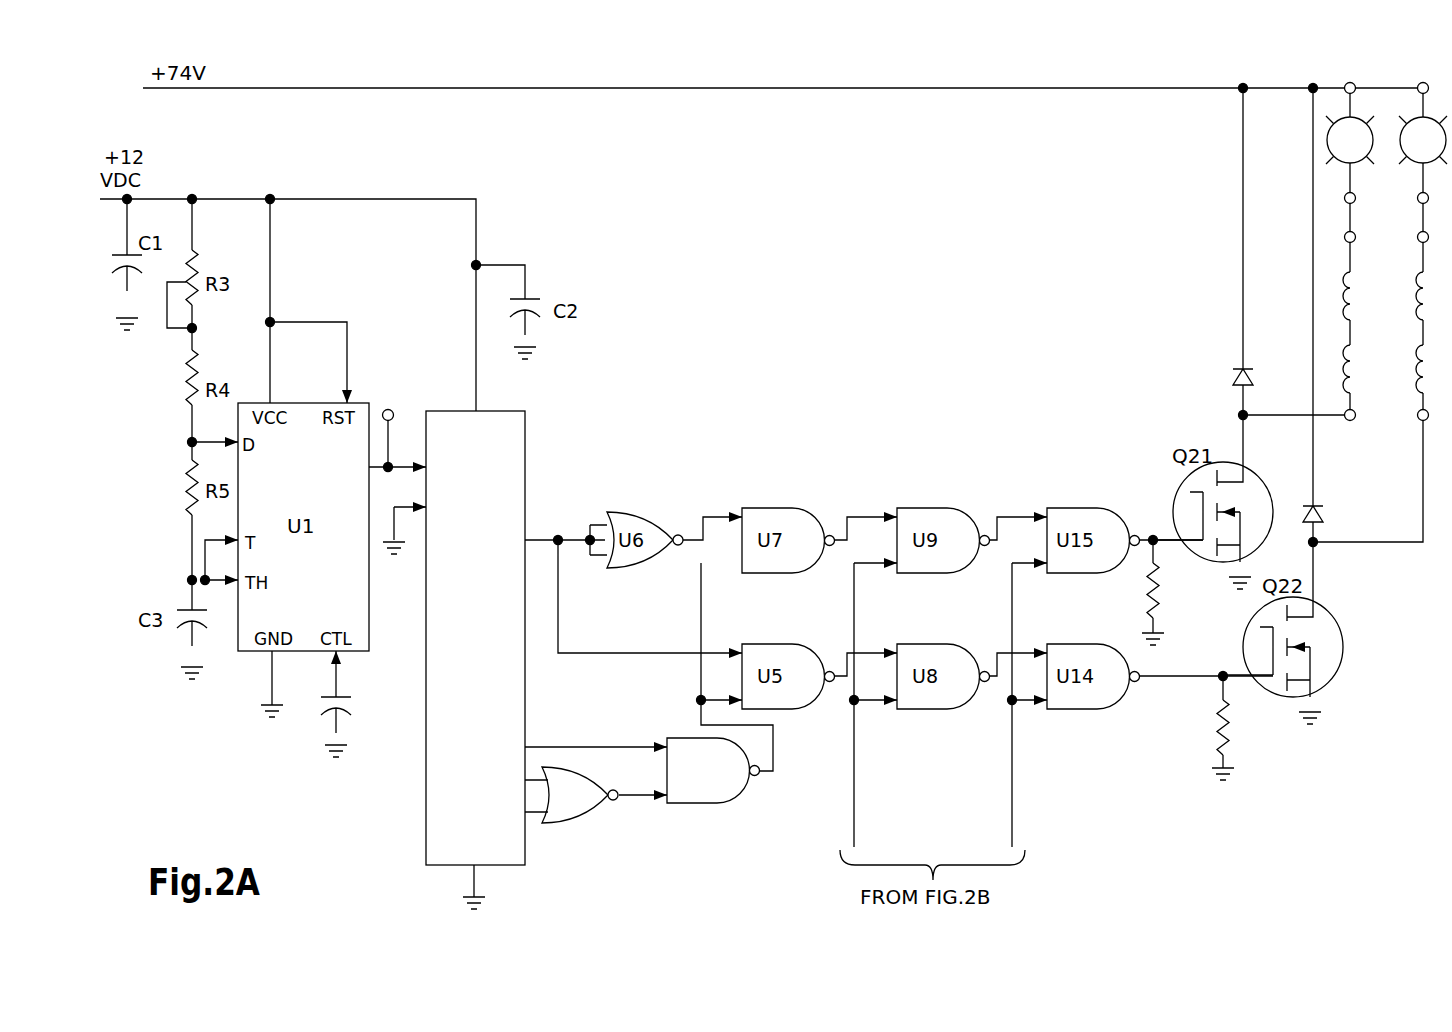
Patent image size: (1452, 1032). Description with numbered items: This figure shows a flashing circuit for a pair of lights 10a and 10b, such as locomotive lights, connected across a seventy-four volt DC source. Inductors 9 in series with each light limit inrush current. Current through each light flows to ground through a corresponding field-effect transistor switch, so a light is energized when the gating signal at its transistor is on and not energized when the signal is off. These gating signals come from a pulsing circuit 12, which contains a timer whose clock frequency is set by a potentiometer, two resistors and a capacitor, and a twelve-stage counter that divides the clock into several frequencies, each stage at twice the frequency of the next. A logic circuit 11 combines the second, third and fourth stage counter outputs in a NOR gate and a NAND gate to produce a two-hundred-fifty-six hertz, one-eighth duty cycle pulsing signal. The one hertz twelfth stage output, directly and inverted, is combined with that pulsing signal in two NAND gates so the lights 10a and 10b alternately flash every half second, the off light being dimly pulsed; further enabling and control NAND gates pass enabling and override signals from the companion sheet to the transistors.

The inductors 9 is at (1343, 296).
The light 10a is at (1360, 160).
The light 10b is at (1436, 120).
The logic circuit 11 is at (690, 822).
The pulsing circuit 12 is at (396, 840).